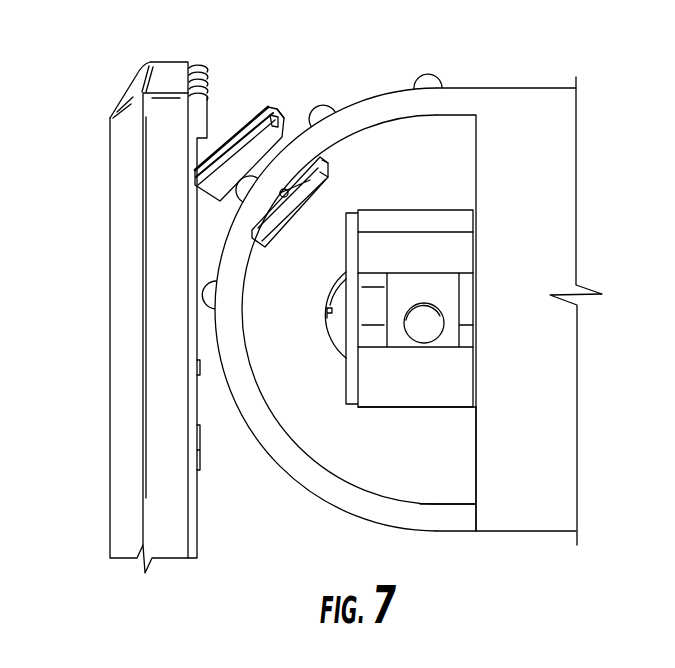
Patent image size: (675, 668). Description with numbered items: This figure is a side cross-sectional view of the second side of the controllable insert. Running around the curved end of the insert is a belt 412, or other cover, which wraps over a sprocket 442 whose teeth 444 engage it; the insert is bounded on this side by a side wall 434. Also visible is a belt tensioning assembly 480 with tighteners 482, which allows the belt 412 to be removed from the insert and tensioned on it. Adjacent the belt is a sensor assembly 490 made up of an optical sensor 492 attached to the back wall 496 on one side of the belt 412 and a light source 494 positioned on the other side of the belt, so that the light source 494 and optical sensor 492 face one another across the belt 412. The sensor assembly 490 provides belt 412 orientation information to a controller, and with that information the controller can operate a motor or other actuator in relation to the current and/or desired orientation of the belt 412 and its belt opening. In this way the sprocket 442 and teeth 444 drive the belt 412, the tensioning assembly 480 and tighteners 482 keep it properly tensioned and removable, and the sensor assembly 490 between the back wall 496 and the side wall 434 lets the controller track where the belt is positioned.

The belt 412 is at (523, 97).
The side wall 434 is at (565, 475).
The sprocket 442 is at (420, 475).
The teeth 444 is at (427, 76).
The belt tensioning assembly 480 is at (330, 422).
The tighteners 482 is at (333, 330).
The sensor assembly 490 is at (180, 161).
The optical sensor 492 is at (258, 128).
The light source 494 is at (291, 148).
The back wall 496 is at (108, 357).